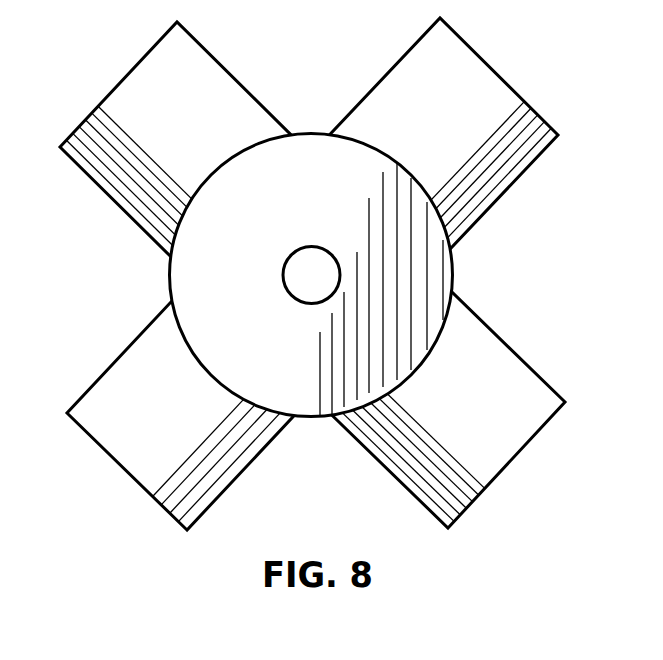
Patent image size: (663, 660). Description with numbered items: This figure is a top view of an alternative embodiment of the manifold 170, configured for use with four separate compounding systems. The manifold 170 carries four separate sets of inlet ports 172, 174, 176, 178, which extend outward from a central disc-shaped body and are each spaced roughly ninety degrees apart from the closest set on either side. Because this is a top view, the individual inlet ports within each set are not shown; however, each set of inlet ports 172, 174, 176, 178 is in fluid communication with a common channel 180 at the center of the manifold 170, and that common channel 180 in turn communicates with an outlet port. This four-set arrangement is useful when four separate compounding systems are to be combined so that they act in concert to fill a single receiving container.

The manifold 170 is at (312, 133).
The set of inlet ports 172 is at (206, 50).
The set of inlet ports 174 is at (393, 65).
The set of inlet ports 176 is at (533, 368).
The set of inlet ports 178 is at (249, 467).
The common channel 180 is at (306, 273).